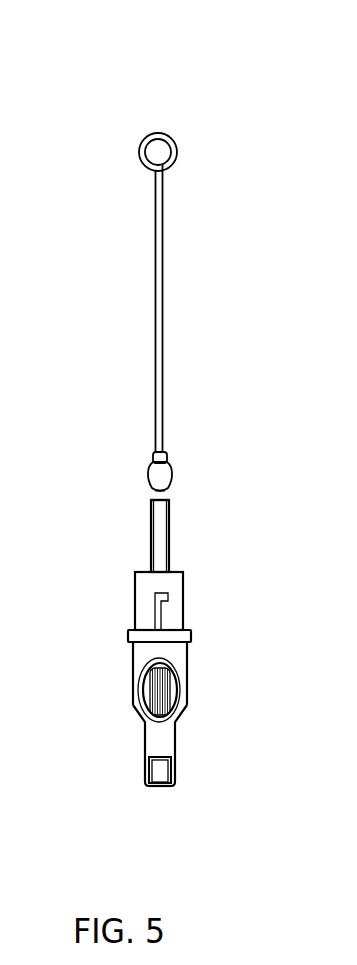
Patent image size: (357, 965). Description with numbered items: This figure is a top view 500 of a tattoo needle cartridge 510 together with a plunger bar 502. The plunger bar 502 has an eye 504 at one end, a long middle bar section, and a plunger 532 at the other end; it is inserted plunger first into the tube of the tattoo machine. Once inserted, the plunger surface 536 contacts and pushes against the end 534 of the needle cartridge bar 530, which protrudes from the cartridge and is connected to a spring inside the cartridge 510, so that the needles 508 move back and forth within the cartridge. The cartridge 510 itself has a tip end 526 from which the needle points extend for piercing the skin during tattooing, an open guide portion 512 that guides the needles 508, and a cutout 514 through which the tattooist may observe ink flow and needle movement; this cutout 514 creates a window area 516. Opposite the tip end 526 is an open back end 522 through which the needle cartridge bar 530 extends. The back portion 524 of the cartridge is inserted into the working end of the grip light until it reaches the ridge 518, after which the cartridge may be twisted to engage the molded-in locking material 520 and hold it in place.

The top view 500 is at (162, 427).
The plunger bar 502 is at (155, 343).
The eye 504 is at (139, 160).
The needles 508 is at (142, 723).
The needle cartridge 510 is at (133, 661).
The open guide portion 512 is at (161, 777).
The cutout 514 is at (145, 711).
The window area 516 is at (148, 690).
The ridge 518 is at (128, 636).
The molded-in locking material 520 is at (155, 608).
The open back end 522 is at (170, 570).
The back portion 524 is at (135, 584).
The tip end 526 is at (158, 787).
The needle cartridge bar 530 is at (151, 533).
The plunger 532 is at (147, 472).
The end of the needle cartridge bar 534 is at (168, 497).
The plunger surface 536 is at (158, 494).